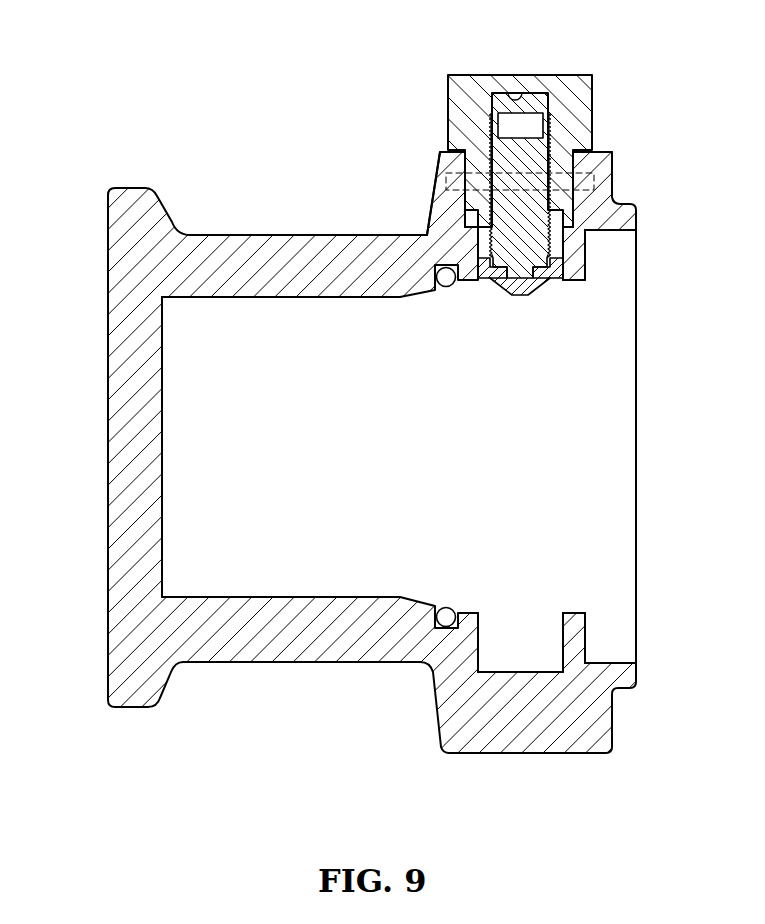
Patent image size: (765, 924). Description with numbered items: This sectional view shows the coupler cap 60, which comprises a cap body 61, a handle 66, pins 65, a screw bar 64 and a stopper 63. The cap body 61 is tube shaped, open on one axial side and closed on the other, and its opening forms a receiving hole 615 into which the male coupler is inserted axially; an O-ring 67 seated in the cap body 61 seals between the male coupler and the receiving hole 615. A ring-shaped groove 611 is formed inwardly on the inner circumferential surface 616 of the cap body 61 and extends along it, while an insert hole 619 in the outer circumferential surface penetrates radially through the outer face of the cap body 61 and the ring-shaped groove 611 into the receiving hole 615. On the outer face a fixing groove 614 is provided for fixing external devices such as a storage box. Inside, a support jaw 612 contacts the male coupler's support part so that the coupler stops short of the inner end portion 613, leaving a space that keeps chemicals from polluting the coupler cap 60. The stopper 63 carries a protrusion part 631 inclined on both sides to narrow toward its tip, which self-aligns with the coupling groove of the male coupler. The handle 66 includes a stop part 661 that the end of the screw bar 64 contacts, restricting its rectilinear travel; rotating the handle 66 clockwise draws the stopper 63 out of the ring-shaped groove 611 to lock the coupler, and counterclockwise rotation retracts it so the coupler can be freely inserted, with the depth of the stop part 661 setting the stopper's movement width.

The coupler cap 60 is at (182, 108).
The cap body 61 is at (553, 735).
The ring-shaped groove 611 is at (517, 662).
The support jaw 612 is at (586, 643).
The inner end portion 613 is at (160, 532).
The fixing groove 614 is at (243, 663).
The receiving hole 615 is at (606, 535).
The inner circumferential surface 616 is at (565, 281).
The insert hole 619 is at (478, 158).
The stopper 63 is at (484, 281).
The protrusion part 631 is at (537, 294).
The screw bar 64 is at (533, 152).
The pin 65 is at (573, 162).
The handle 66 is at (467, 87).
The stop part 661 is at (520, 97).
The O-ring 67 is at (440, 640).